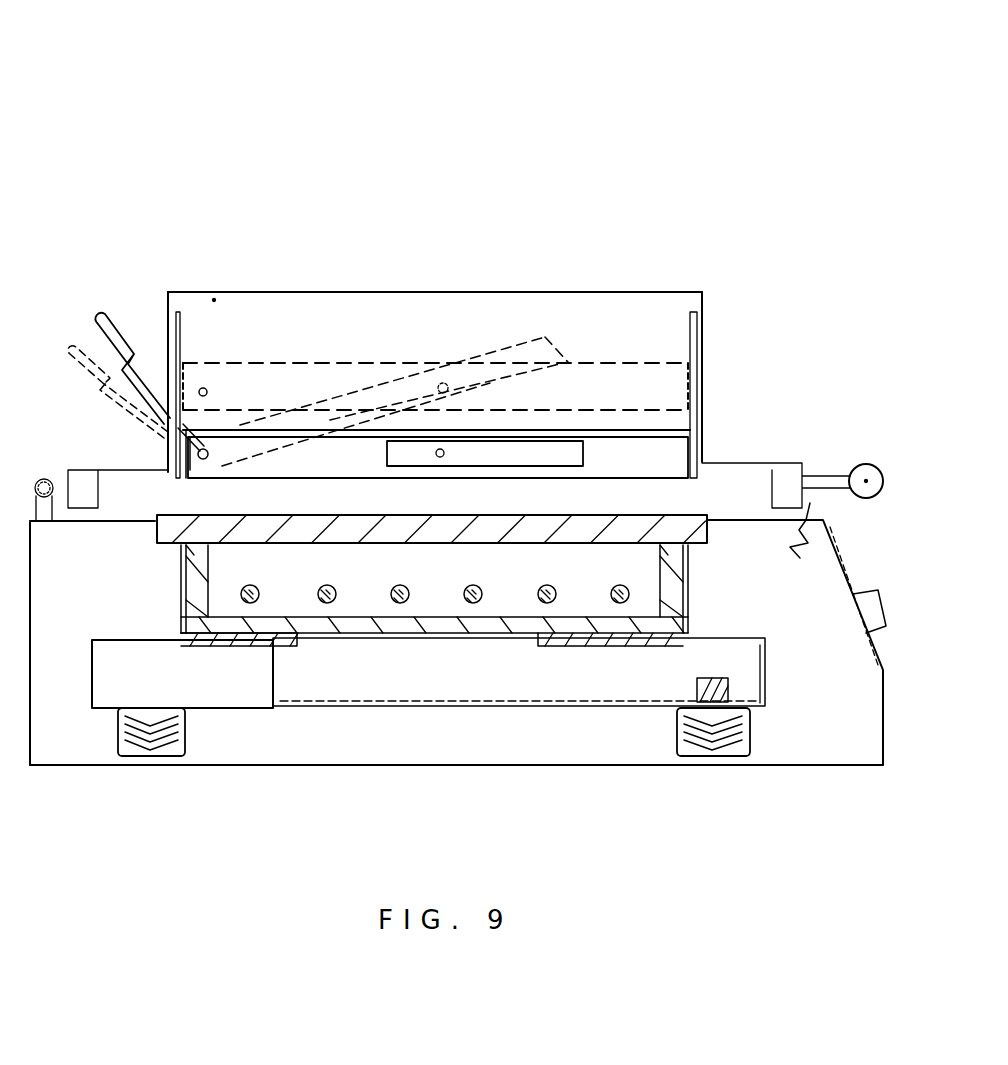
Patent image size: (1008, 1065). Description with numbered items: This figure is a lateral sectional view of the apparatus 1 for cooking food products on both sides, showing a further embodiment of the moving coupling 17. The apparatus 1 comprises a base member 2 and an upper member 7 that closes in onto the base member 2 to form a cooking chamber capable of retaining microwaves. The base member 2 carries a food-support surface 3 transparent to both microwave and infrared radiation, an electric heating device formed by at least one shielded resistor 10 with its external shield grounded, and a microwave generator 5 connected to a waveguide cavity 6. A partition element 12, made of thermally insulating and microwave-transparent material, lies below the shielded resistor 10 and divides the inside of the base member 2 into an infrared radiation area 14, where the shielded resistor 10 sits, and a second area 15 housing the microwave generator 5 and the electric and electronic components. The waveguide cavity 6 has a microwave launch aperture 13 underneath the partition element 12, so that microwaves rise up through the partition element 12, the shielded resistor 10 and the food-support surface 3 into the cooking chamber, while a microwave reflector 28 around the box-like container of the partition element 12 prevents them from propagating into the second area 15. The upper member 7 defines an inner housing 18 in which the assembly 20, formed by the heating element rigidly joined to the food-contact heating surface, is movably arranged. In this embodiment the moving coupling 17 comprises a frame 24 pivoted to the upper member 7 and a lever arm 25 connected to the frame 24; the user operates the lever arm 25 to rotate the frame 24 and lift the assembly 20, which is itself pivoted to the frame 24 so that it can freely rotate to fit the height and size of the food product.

The apparatus 1 is at (546, 92).
The base member 2 is at (832, 546).
The food-support surface 3 is at (246, 532).
The microwave generator 5 is at (184, 726).
The waveguide cavity 6 is at (624, 665).
The upper member 7 is at (213, 292).
The shielded resistor 10 is at (340, 590).
The partition element 12 is at (200, 606).
The microwave launch aperture 13 is at (506, 645).
The infrared radiation area 14 is at (598, 558).
The second area 15 is at (434, 748).
The moving coupling 17 is at (205, 425).
The inner housing 18 is at (382, 312).
The assembly 20 is at (634, 390).
The frame 24 is at (554, 342).
The lever arm 25 is at (103, 322).
The microwave reflector 28 is at (178, 573).